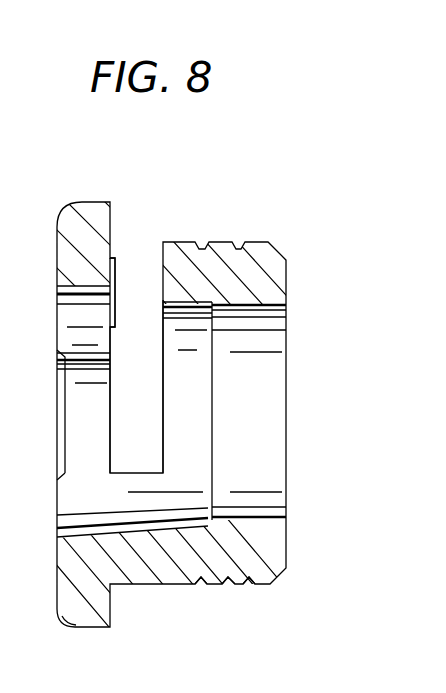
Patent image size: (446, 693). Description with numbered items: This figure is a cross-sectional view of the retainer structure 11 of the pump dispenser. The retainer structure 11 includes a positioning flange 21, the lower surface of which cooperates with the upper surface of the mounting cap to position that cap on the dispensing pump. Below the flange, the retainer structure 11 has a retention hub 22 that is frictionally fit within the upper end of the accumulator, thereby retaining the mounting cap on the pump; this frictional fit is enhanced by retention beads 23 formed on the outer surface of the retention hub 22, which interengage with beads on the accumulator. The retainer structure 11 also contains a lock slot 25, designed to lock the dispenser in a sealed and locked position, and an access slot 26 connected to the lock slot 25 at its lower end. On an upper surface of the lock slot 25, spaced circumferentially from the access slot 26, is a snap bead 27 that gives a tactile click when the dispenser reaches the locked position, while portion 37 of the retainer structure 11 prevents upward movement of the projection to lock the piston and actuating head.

The retainer structure 11 is at (240, 187).
The positioning flange 21 is at (89, 202).
The retention hub 22 is at (263, 586).
The retention beads 23 is at (232, 586).
The lock slot 25 is at (140, 277).
The access slot 26 is at (83, 400).
The snap bead 27 is at (115, 260).
The portion of retainer structure 37 is at (84, 237).